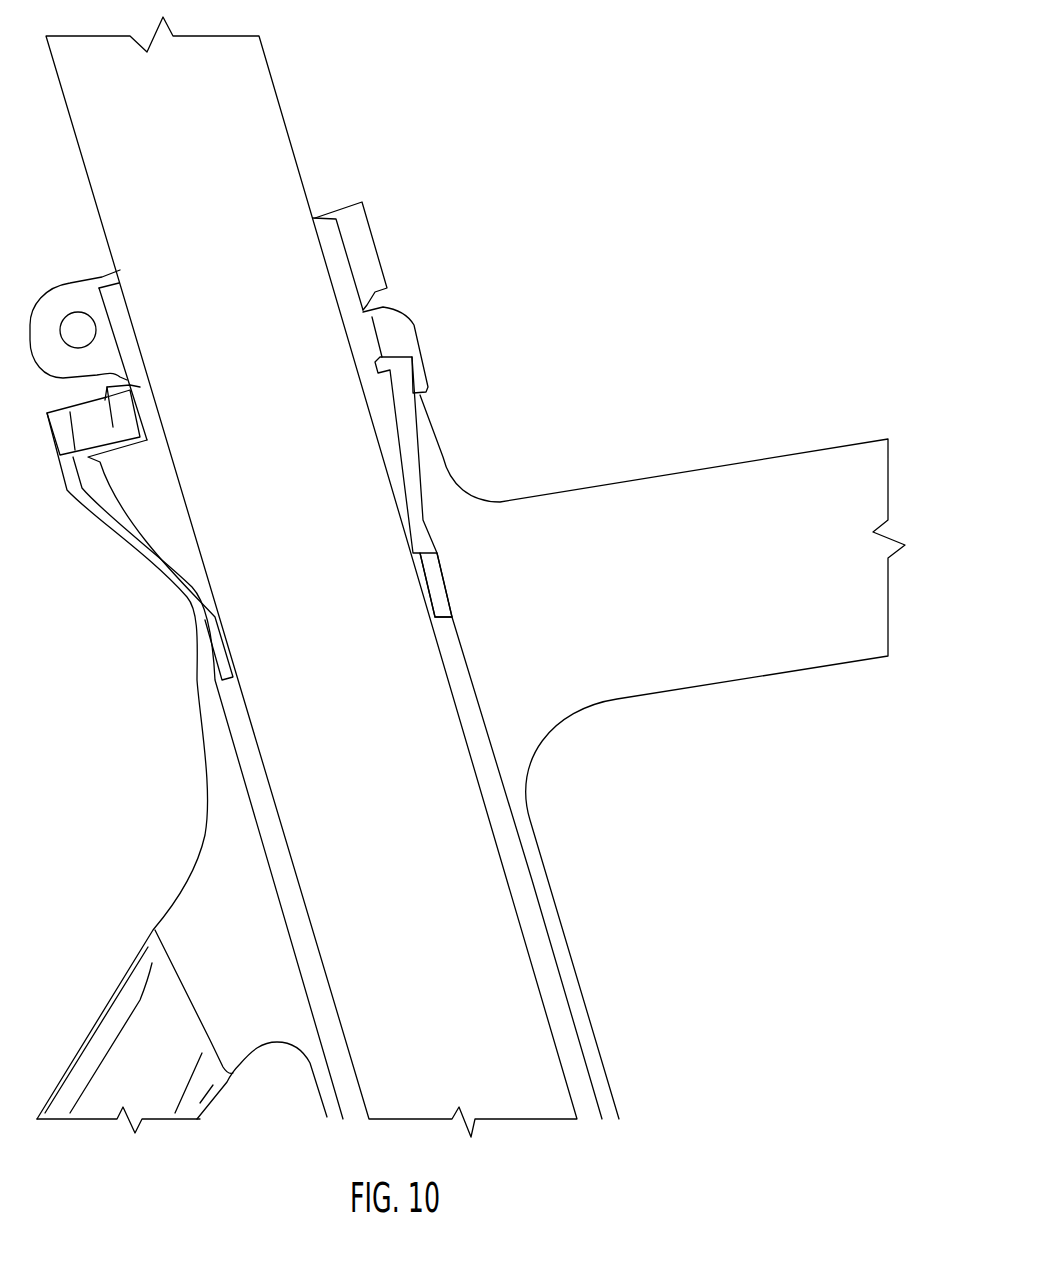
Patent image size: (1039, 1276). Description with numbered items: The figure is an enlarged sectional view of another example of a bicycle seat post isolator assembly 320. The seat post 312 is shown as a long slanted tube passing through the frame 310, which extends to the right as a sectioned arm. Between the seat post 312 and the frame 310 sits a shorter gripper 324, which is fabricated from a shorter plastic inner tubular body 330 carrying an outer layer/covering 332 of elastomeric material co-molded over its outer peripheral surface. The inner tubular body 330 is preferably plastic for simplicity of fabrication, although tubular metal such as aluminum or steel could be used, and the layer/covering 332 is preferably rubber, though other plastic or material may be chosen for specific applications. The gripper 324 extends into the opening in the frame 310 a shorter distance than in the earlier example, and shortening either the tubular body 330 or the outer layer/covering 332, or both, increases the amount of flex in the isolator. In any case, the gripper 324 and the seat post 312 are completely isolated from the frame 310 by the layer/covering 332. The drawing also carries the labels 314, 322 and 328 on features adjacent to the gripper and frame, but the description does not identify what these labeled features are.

The frame 310 is at (687, 492).
The seat post 312 is at (263, 130).
The gap 314 is at (400, 294).
The bicycle seat post isolator assembly 320 is at (632, 311).
The clip 322 is at (408, 332).
The gripper 324 is at (131, 588).
The strip 328 is at (363, 243).
The inner tubular body 330 is at (413, 402).
The outer layer/covering 332 is at (413, 437).